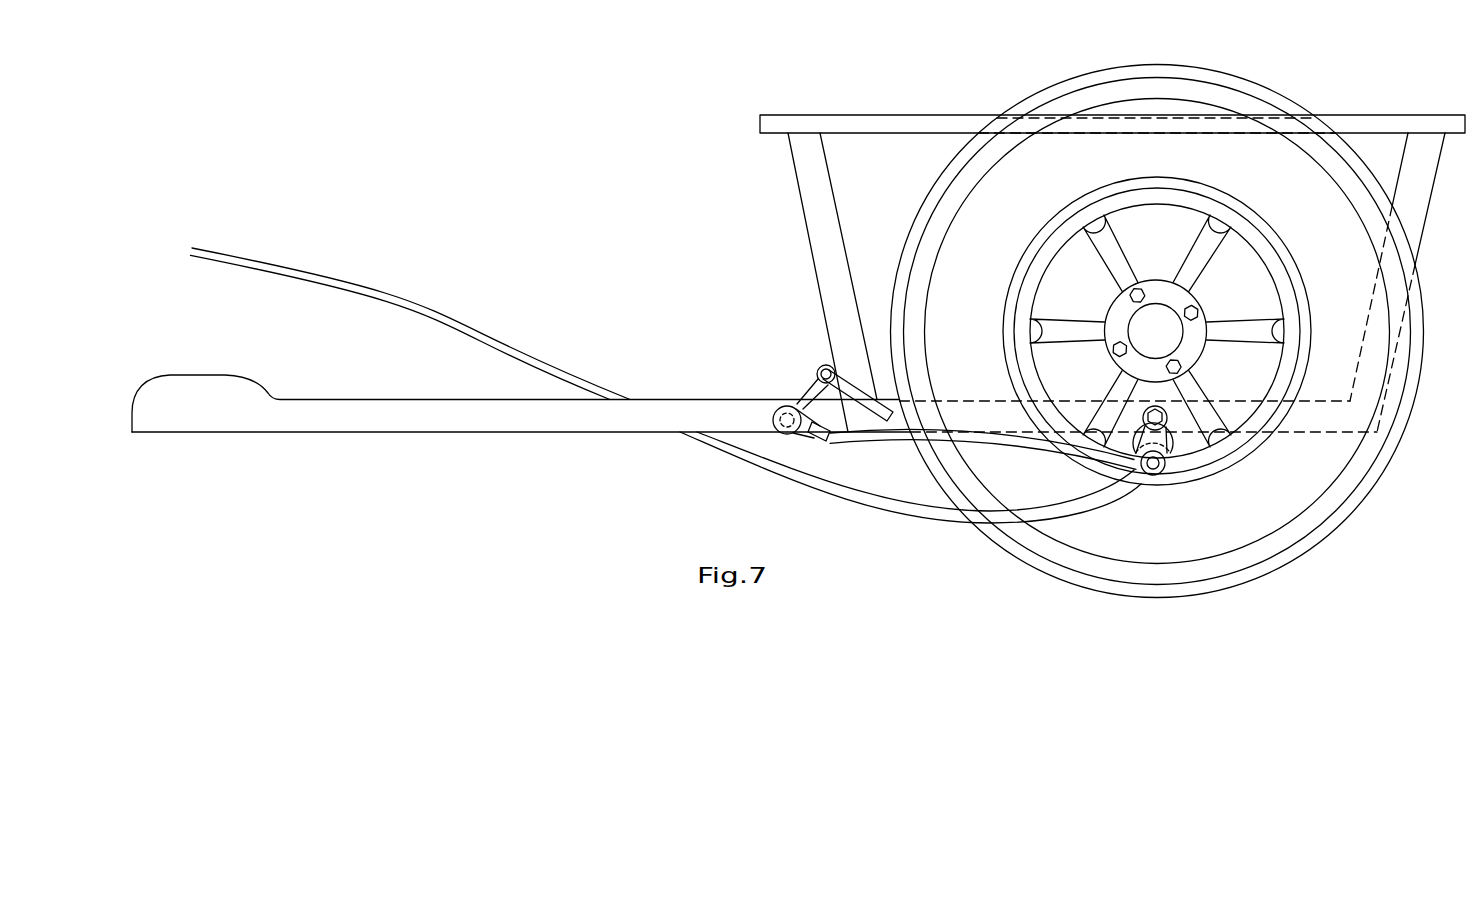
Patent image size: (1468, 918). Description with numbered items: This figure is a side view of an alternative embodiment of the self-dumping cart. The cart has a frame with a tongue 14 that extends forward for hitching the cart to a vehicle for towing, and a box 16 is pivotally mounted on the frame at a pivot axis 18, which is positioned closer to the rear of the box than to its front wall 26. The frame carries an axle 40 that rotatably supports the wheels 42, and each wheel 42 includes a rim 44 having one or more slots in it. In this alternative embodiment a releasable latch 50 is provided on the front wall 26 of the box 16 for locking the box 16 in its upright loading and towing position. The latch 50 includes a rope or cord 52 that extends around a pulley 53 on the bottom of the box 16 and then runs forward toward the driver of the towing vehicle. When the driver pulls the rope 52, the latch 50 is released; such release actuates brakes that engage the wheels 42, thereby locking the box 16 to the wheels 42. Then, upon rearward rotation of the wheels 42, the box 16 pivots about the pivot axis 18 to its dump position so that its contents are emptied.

The tongue 14 is at (732, 400).
The box 16 is at (818, 180).
The front wall 26 is at (812, 258).
The releasable latch 50 is at (812, 385).
The rope or cord 52 is at (487, 332).
The wheels 42 is at (1205, 72).
The rim 44 is at (1080, 217).
The axle 40 is at (1170, 308).
The pivot axis 18 is at (1137, 484).
The pulley 53 is at (1153, 430).